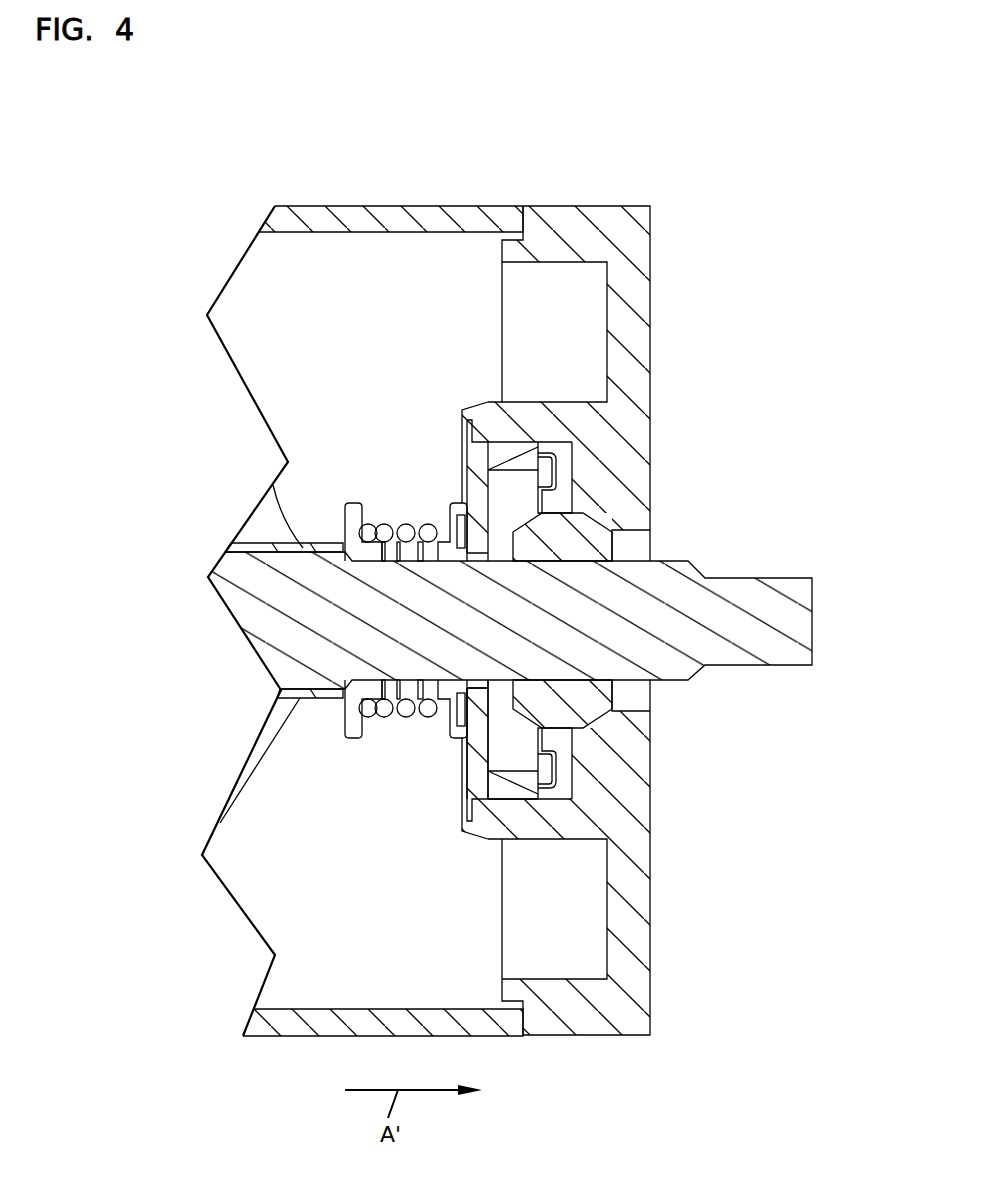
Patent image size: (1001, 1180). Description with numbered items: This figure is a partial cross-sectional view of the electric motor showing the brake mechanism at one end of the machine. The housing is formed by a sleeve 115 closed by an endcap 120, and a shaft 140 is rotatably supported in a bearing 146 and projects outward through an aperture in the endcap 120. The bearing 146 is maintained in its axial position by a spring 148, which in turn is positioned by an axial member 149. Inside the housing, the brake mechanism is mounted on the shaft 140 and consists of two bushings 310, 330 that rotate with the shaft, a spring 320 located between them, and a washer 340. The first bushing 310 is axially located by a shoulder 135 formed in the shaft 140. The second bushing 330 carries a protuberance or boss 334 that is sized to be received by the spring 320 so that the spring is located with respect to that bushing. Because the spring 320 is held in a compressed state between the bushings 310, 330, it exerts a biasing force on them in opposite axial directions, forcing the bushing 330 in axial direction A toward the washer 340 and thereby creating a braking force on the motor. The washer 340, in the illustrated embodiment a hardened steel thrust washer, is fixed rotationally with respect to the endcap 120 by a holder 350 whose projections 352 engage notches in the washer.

The sleeve 115 is at (362, 218).
The endcap 120 is at (640, 258).
The shoulder 135 is at (342, 687).
The shaft 140 is at (795, 585).
The bearing 146 is at (597, 535).
The spring 148 is at (553, 767).
The axial member 149 is at (522, 785).
The bushing 310 is at (352, 503).
The spring 320 is at (384, 533).
The bushing 330 is at (448, 690).
The boss 334 is at (447, 545).
The washer 340 is at (473, 765).
The holder 350 is at (500, 410).
The projections 352 is at (485, 810).